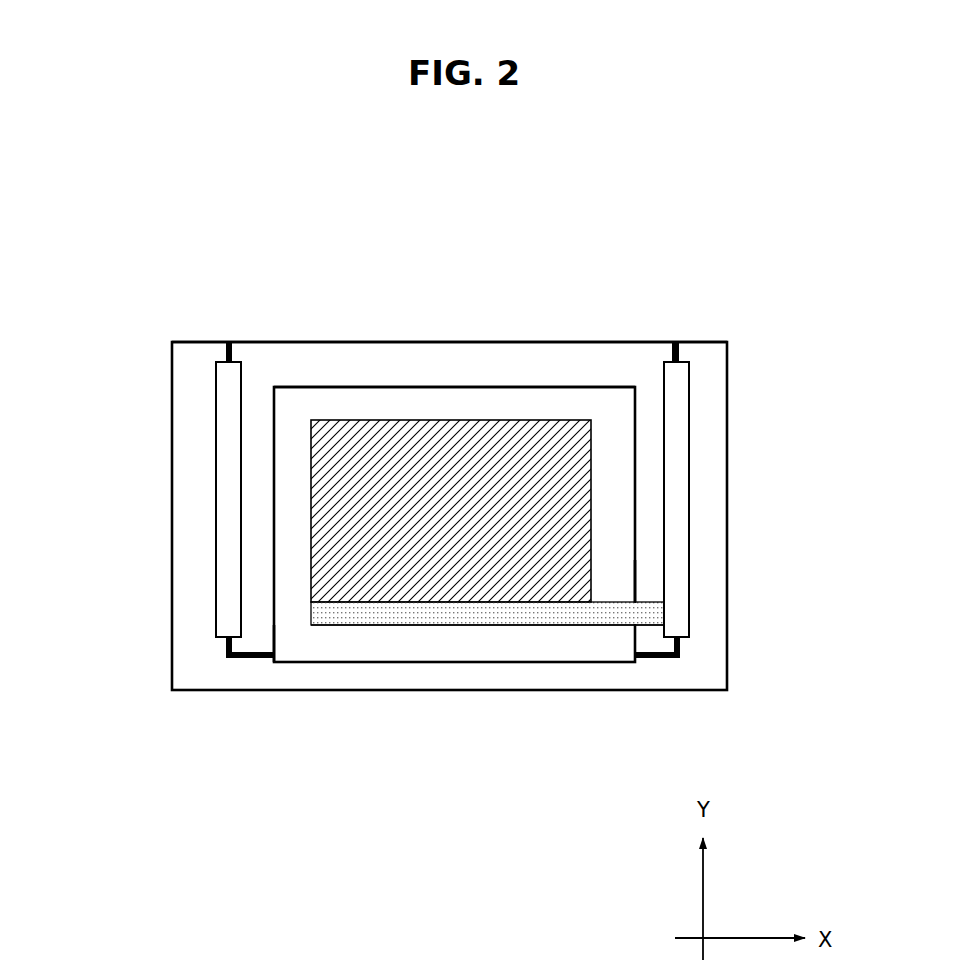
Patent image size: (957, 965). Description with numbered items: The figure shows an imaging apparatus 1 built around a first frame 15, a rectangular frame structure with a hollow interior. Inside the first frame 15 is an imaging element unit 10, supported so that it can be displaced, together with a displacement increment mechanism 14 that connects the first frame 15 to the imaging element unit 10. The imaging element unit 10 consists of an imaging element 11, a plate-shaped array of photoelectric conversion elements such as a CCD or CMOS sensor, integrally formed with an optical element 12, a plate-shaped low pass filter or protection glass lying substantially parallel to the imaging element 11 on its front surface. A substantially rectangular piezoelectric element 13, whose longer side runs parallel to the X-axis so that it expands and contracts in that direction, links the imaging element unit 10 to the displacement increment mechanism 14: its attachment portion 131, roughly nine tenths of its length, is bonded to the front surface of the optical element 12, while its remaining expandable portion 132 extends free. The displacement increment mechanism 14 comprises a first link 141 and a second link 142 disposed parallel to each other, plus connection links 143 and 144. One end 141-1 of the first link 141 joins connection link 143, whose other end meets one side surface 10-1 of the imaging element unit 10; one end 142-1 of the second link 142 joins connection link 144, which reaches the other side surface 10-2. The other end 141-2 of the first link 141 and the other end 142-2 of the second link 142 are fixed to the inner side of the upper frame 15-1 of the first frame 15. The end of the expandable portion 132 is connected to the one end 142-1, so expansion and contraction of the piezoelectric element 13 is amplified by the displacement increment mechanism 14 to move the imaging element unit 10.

The imaging apparatus 1 is at (730, 300).
The imaging element unit 10 is at (465, 400).
The one side surface of the imaging element unit 10-1 is at (272, 633).
The other side surface of the imaging element unit 10-2 is at (637, 582).
The imaging element 11 is at (550, 388).
The optical element 12 is at (415, 420).
The piezoelectric element 13 is at (487, 712).
The attachment portion 131 is at (542, 625).
The expandable portion 132 is at (613, 625).
The displacement increment mechanism 14 is at (453, 553).
The first link 141 is at (215, 493).
The one end of the first link 141-1 is at (215, 630).
The other end of the first link 141-2 is at (215, 367).
The second link 142 is at (690, 462).
The one end of the second link 142-1 is at (689, 628).
The other end of the second link 142-2 is at (690, 370).
The connection link 143 is at (258, 660).
The connection link 144 is at (665, 660).
The first frame 15 is at (733, 555).
The upper frame 15-1 is at (335, 353).